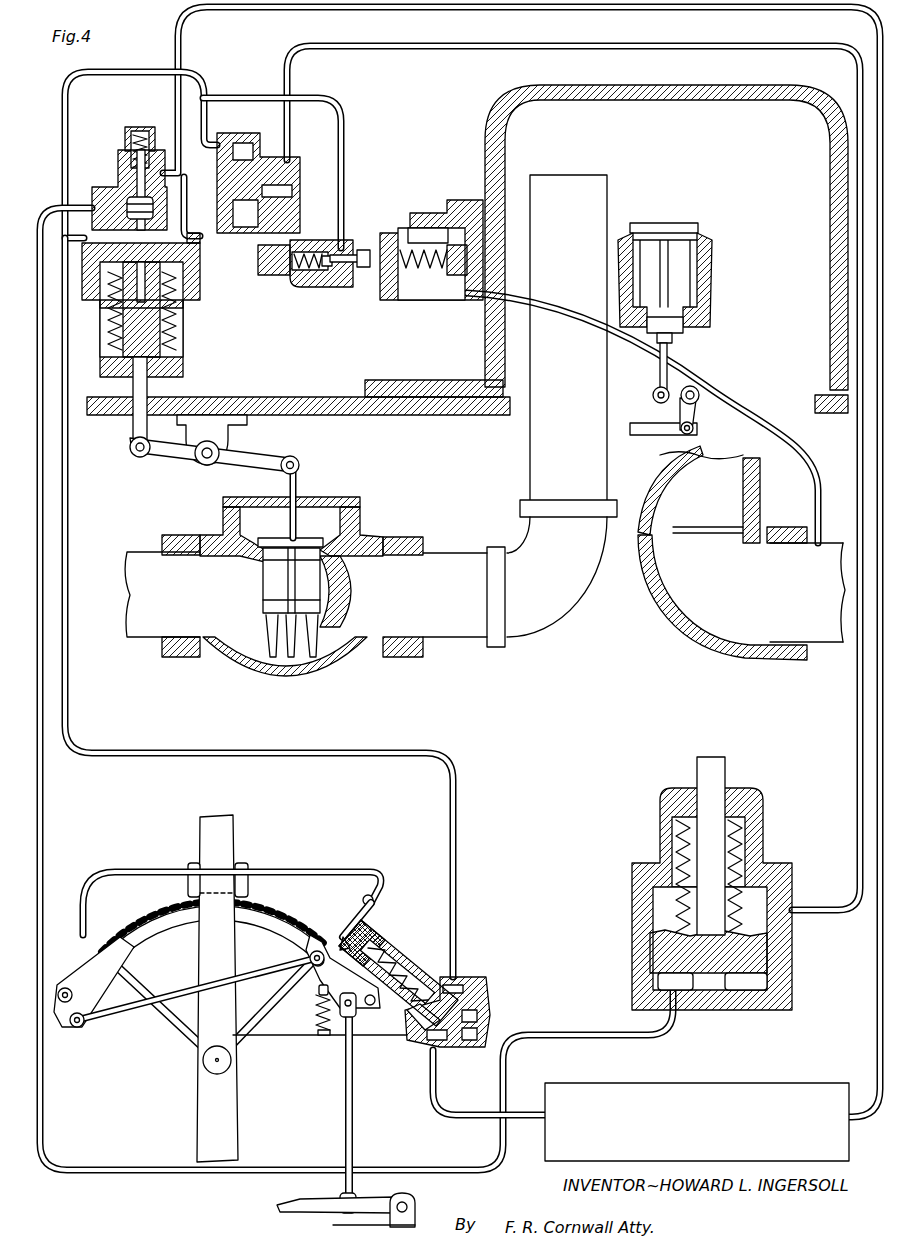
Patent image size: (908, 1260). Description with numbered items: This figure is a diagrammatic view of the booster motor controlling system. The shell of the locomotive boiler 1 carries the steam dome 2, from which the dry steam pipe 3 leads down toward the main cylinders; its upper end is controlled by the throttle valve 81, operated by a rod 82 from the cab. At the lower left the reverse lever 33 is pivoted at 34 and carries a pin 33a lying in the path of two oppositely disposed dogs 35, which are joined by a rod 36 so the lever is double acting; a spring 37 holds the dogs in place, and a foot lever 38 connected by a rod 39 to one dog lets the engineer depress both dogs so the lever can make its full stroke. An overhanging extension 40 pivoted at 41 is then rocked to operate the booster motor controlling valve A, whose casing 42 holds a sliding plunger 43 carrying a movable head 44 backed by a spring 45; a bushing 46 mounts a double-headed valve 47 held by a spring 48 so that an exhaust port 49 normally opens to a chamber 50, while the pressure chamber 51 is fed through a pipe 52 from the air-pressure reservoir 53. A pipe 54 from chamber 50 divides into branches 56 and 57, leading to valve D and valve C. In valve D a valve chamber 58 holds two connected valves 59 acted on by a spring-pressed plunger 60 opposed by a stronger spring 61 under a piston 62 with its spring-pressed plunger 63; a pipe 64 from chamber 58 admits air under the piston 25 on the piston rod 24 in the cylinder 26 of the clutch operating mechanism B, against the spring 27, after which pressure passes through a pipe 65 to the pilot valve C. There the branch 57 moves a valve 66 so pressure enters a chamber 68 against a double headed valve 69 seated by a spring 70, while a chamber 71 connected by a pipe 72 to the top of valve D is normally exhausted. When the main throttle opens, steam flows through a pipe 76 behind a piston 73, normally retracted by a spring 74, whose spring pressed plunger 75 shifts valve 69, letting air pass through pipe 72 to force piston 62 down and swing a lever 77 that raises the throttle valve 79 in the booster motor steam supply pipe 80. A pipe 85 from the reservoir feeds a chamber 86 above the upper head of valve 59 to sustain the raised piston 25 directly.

The shell of locomotive boiler 1 is at (283, 397).
The steam dome 2 is at (518, 114).
The dry steam pipe 3 is at (740, 553).
The piston rod 24 is at (718, 760).
The piston 25 is at (747, 978).
The cylinder 26 is at (630, 890).
The spring 27 is at (675, 912).
The reverse lever 33 is at (212, 830).
The pin or projection 33a is at (180, 898).
The pivot 34 is at (212, 1062).
The dogs 35 is at (100, 960).
The rod 36 is at (150, 1018).
The spring 37 is at (314, 1018).
The foot lever 38 is at (276, 1205).
The rod 39 is at (346, 1132).
The overhanging extension 40 is at (300, 870).
The pivot 41 is at (362, 900).
The casing 42 is at (368, 1006).
The plunger 43 is at (340, 933).
The movable head 44 is at (405, 965).
The spring 45 is at (392, 945).
The bushing 46 is at (486, 985).
The double-headed valve 47 is at (445, 985).
The spring 48 is at (485, 1020).
The exhaust port 49 is at (415, 1028).
The chamber 50 is at (458, 975).
The pressure chamber 51 is at (428, 1040).
The pipe 52 is at (432, 1088).
The air-pressure reservoir 53 is at (697, 1122).
The pipe 54 is at (64, 503).
The branch pipe 56 is at (101, 308).
The branch pipe 57 is at (68, 120).
The valve chamber 58 is at (154, 210).
The connected valves 59 is at (112, 188).
The spring-pressed plunger 60 is at (146, 127).
The spring 61 is at (201, 265).
The piston 62 is at (190, 240).
The spring-pressed plunger 63 is at (184, 285).
The pipe 64 is at (52, 210).
The pipe 65 is at (856, 82).
The valve 66 is at (258, 140).
The chamber 68 is at (300, 275).
The double headed valve 69 is at (325, 272).
The spring 70 is at (266, 276).
The chamber 71 is at (362, 270).
The pipe 72 is at (344, 170).
The piston 73 is at (462, 302).
The spring 74 is at (428, 302).
The spring pressed plunger 75 is at (405, 282).
The pipe 76 is at (766, 426).
The lever 77 is at (182, 462).
The throttle valve 79 is at (372, 524).
The booster motor steam supply pipe 80 is at (546, 454).
The throttle valve 81 is at (683, 300).
The rod 82 is at (656, 436).
The pipe 85 is at (185, 37).
The chamber 86 is at (126, 160).
The booster motor controlling valve A is at (478, 975).
The clutch operating mechanism B is at (767, 826).
The pilot valve C is at (330, 290).
The valve D is at (186, 342).